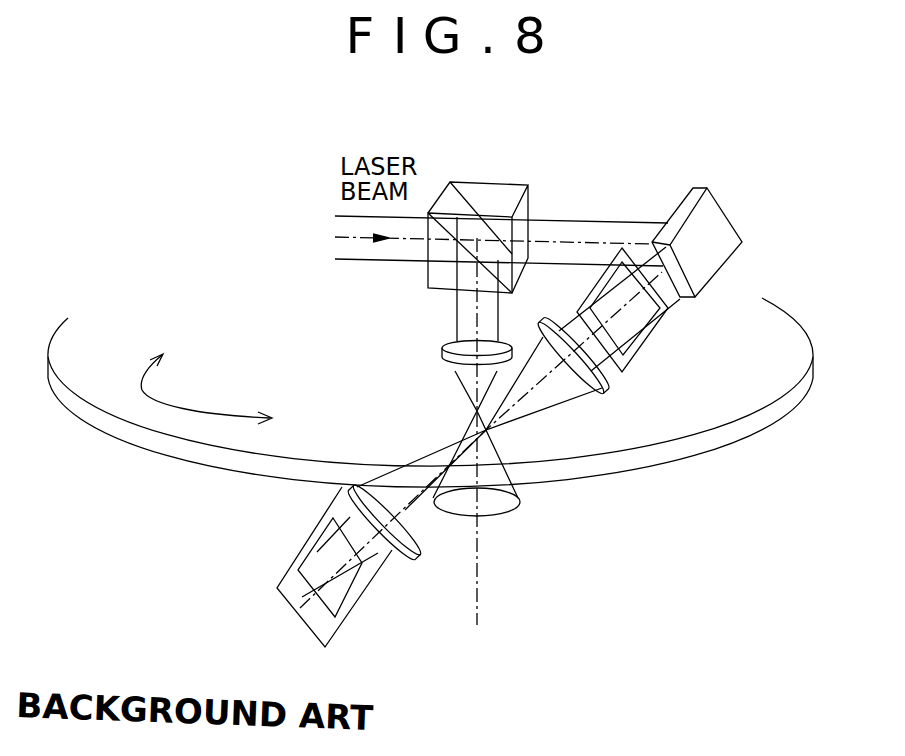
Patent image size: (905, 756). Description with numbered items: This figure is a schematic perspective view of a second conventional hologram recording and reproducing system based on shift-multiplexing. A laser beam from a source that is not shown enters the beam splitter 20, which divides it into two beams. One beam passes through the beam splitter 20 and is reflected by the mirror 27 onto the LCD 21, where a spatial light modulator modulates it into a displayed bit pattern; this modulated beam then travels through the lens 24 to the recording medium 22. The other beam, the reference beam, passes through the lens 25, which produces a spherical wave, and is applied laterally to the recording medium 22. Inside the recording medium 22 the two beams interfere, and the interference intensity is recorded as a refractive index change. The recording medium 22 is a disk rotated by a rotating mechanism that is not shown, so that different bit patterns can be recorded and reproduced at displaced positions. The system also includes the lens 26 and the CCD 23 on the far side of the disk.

The beam splitter 20 is at (517, 181).
The LCD 21 is at (652, 338).
The recording medium 22 is at (108, 343).
The CCD 23 is at (292, 560).
The lens 24 is at (603, 393).
The lens 25 is at (445, 362).
The lens 26 is at (412, 557).
The mirror 27 is at (733, 211).